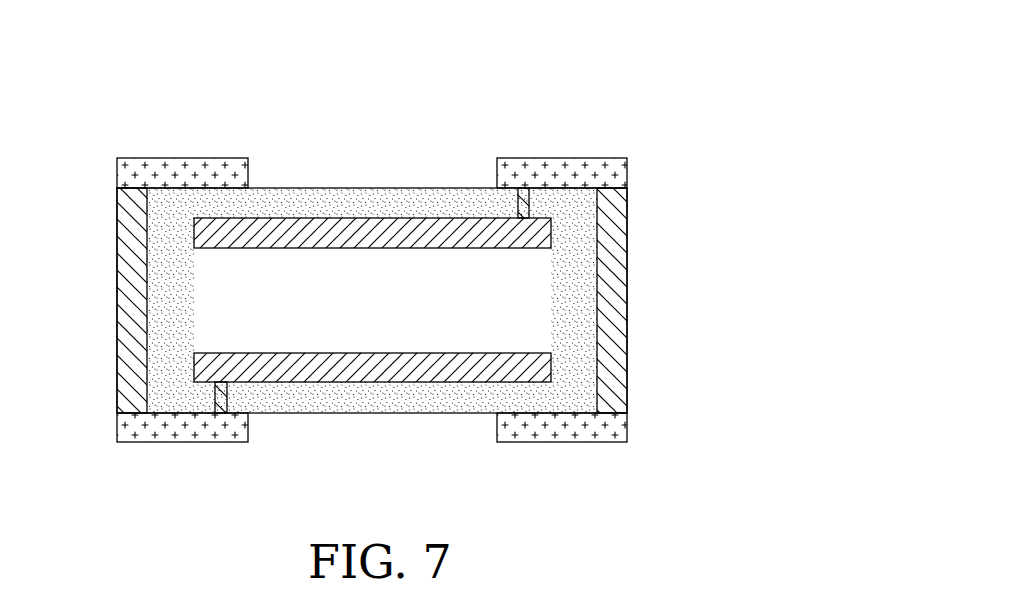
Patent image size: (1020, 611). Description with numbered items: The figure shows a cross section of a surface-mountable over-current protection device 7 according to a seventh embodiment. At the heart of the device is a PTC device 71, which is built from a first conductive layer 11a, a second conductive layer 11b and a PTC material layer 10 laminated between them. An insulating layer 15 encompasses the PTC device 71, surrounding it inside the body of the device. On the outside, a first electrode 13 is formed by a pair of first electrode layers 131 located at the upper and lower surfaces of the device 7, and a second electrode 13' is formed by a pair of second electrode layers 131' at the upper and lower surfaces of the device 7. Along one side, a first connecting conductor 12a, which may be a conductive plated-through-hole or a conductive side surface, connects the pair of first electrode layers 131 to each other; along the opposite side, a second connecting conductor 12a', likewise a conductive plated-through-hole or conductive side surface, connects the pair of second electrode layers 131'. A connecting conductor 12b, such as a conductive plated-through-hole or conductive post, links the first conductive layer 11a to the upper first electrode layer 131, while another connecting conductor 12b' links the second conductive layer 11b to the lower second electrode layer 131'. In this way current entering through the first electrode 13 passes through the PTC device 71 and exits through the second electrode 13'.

The surface-mountable over-current protection device 7 is at (598, 125).
The PTC material layer 10 is at (532, 290).
The first conductive layer 11a is at (370, 218).
The second conductive layer 11b is at (380, 383).
The first connecting conductor 12a is at (648, 300).
The second connecting conductor 12a' is at (94, 300).
The connecting conductor 12b is at (608, 204).
The connecting conductor 12b' is at (134, 397).
The first electrode 13 is at (562, 457).
The second electrode 13' is at (182, 457).
The insulating layer 15 is at (303, 203).
The PTC device 71 is at (533, 333).
The first electrode layers 131 is at (598, 300).
The second electrode layers 131' is at (145, 300).